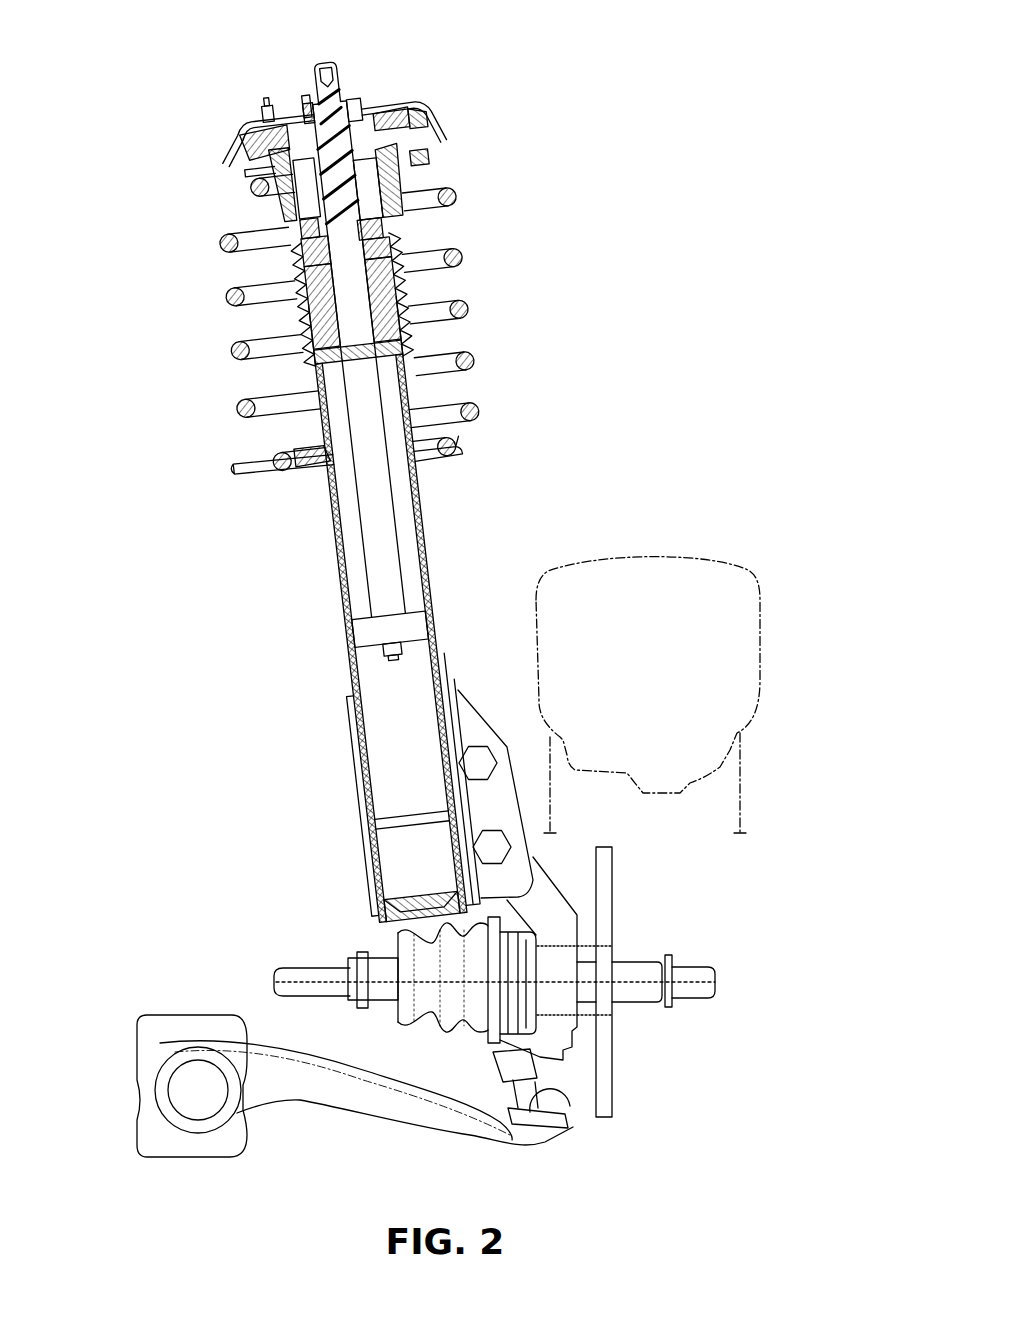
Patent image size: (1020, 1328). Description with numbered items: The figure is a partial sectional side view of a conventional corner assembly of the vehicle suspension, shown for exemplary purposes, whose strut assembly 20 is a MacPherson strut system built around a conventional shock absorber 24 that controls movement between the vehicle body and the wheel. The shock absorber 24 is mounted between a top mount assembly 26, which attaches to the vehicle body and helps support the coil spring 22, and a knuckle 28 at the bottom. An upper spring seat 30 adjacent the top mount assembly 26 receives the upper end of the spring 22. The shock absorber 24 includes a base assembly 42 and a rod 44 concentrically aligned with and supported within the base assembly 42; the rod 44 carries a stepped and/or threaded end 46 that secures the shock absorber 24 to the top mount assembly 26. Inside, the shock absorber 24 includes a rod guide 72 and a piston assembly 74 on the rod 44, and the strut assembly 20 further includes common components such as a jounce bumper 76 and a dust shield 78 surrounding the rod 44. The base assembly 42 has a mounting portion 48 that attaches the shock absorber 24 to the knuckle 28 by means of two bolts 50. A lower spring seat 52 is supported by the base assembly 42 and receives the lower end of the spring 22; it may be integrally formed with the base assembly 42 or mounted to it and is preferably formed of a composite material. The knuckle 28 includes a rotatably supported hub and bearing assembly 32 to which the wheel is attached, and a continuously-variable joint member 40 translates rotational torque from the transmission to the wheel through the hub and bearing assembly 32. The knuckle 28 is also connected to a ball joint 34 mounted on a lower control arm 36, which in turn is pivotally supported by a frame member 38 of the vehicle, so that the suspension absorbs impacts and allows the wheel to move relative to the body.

The strut assembly 20 is at (280, 508).
The spring 22 is at (458, 193).
The shock absorber 24 is at (318, 632).
The top mount assembly 26 is at (402, 76).
The knuckle 28 is at (678, 902).
The upper spring seat 30 is at (407, 177).
The hub and bearing assembly 32 is at (648, 958).
The ball joint 34 is at (573, 1127).
The lower control arm 36 is at (364, 1088).
The frame member 38 is at (198, 1110).
The continuously-variable joint member 40 is at (384, 944).
The base assembly 42 is at (423, 558).
The rod 44 is at (377, 533).
The stepped and/or threaded end 46 is at (347, 108).
The mounting portion 48 is at (460, 728).
The bolts 50 is at (500, 848).
The lower spring seat 52 is at (462, 460).
The rod guide 72 is at (403, 371).
The piston assembly 74 is at (407, 623).
The jounce bumper 76 is at (400, 288).
The dust shield 78 is at (410, 334).